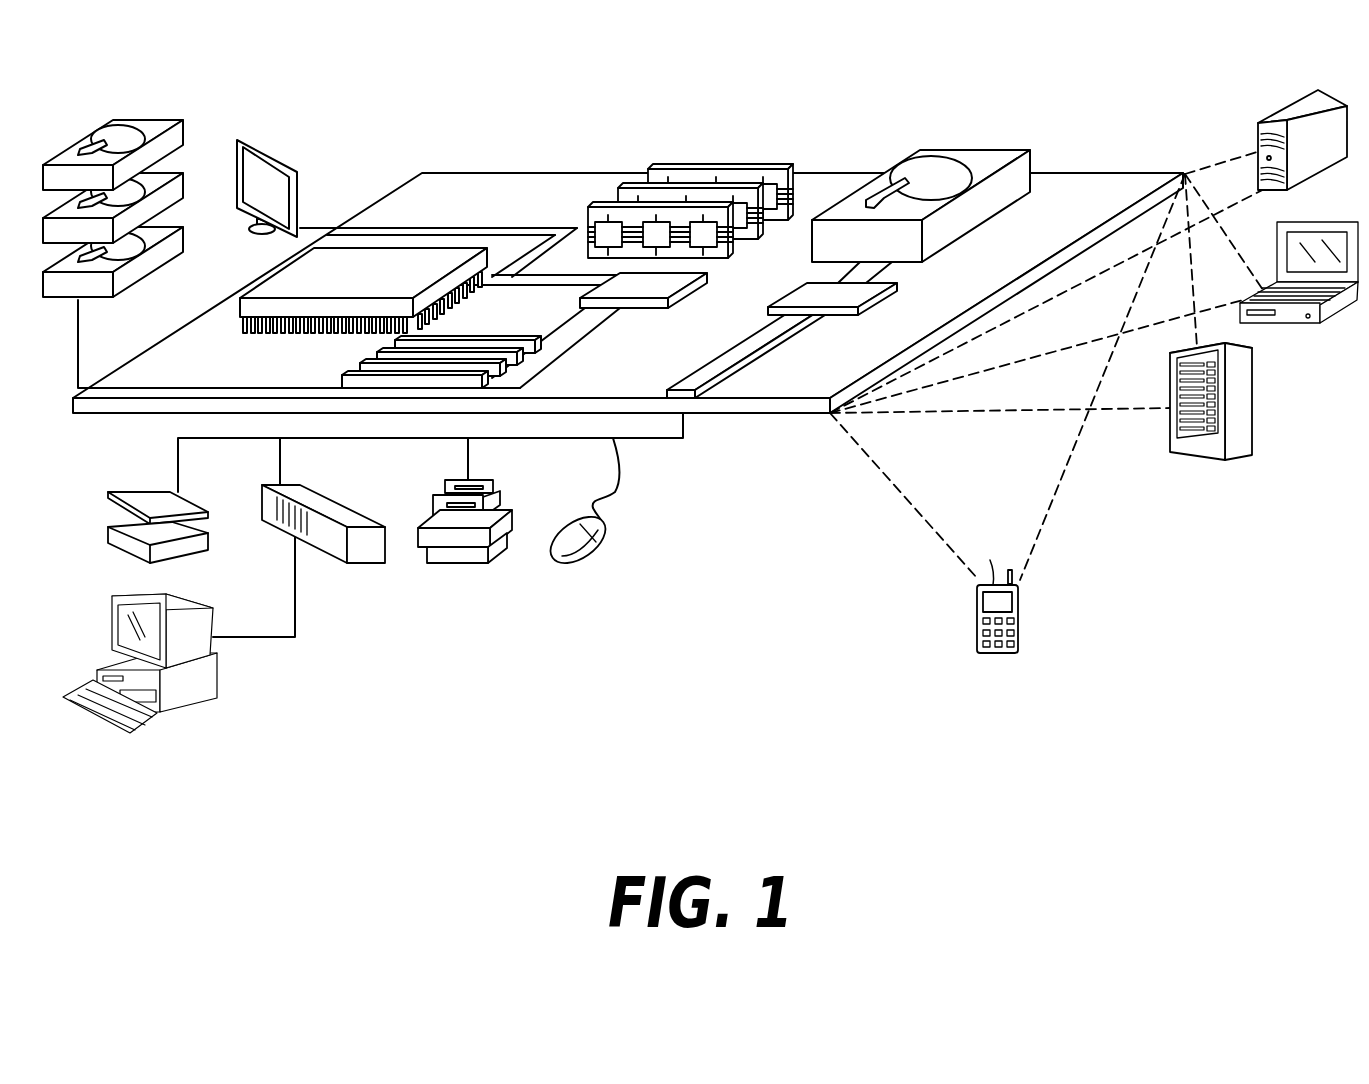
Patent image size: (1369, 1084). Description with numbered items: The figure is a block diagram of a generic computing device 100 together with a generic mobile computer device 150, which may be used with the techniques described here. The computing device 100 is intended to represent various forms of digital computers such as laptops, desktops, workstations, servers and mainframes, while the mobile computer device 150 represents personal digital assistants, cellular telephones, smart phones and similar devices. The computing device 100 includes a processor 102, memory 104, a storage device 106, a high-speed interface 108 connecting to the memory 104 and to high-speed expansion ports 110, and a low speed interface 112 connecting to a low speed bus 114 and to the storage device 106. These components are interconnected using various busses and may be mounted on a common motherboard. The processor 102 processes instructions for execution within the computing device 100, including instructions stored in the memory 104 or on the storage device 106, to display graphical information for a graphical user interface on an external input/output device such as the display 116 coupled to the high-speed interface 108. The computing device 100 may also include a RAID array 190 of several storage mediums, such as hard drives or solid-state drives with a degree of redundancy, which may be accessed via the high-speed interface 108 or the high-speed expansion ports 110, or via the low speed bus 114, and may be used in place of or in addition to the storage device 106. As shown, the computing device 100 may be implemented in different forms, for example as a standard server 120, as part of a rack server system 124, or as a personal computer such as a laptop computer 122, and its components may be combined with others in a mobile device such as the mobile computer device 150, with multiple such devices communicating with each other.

The computing device 100 is at (370, 117).
The processor 102 is at (264, 282).
The memory 104 is at (725, 167).
The storage device 106 is at (965, 149).
The high-speed interface 108 is at (656, 285).
The high-speed expansion ports 110 is at (368, 362).
The low speed interface 112 is at (805, 292).
The low speed bus 114 is at (688, 383).
The display 116 is at (242, 140).
The standard server 120 is at (1282, 120).
The laptop computer 122 is at (1335, 222).
The rack server system 124 is at (1253, 402).
The mobile computer device 150 is at (1013, 632).
The RAID array 190 is at (112, 120).